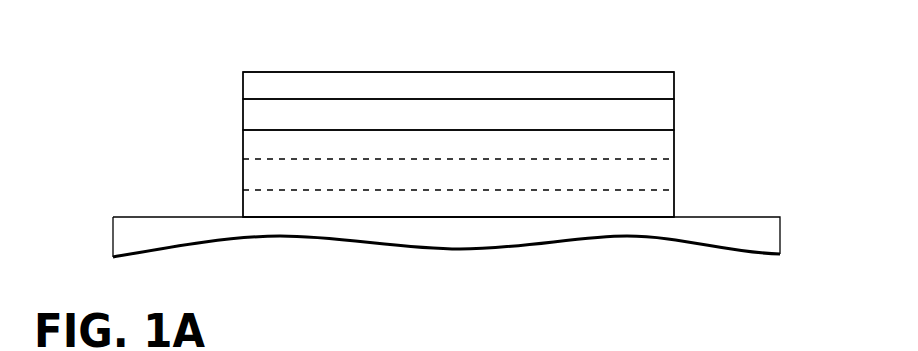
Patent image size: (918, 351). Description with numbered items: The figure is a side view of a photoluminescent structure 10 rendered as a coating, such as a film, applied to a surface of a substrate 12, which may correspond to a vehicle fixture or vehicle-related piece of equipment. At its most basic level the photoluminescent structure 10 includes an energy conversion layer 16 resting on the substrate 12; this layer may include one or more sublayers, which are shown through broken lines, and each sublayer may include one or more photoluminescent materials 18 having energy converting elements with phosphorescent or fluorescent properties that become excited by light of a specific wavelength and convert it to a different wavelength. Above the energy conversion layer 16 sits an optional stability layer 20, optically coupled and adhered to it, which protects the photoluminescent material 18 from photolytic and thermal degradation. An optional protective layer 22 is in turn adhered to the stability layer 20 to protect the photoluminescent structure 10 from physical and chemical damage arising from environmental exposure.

The photoluminescent structure 10 is at (607, 45).
The substrate 12 is at (720, 217).
The energy conversion layer 16 is at (243, 172).
The photoluminescent material 18 is at (627, 173).
The stability layer 20 is at (243, 115).
The protective layer 22 is at (338, 72).